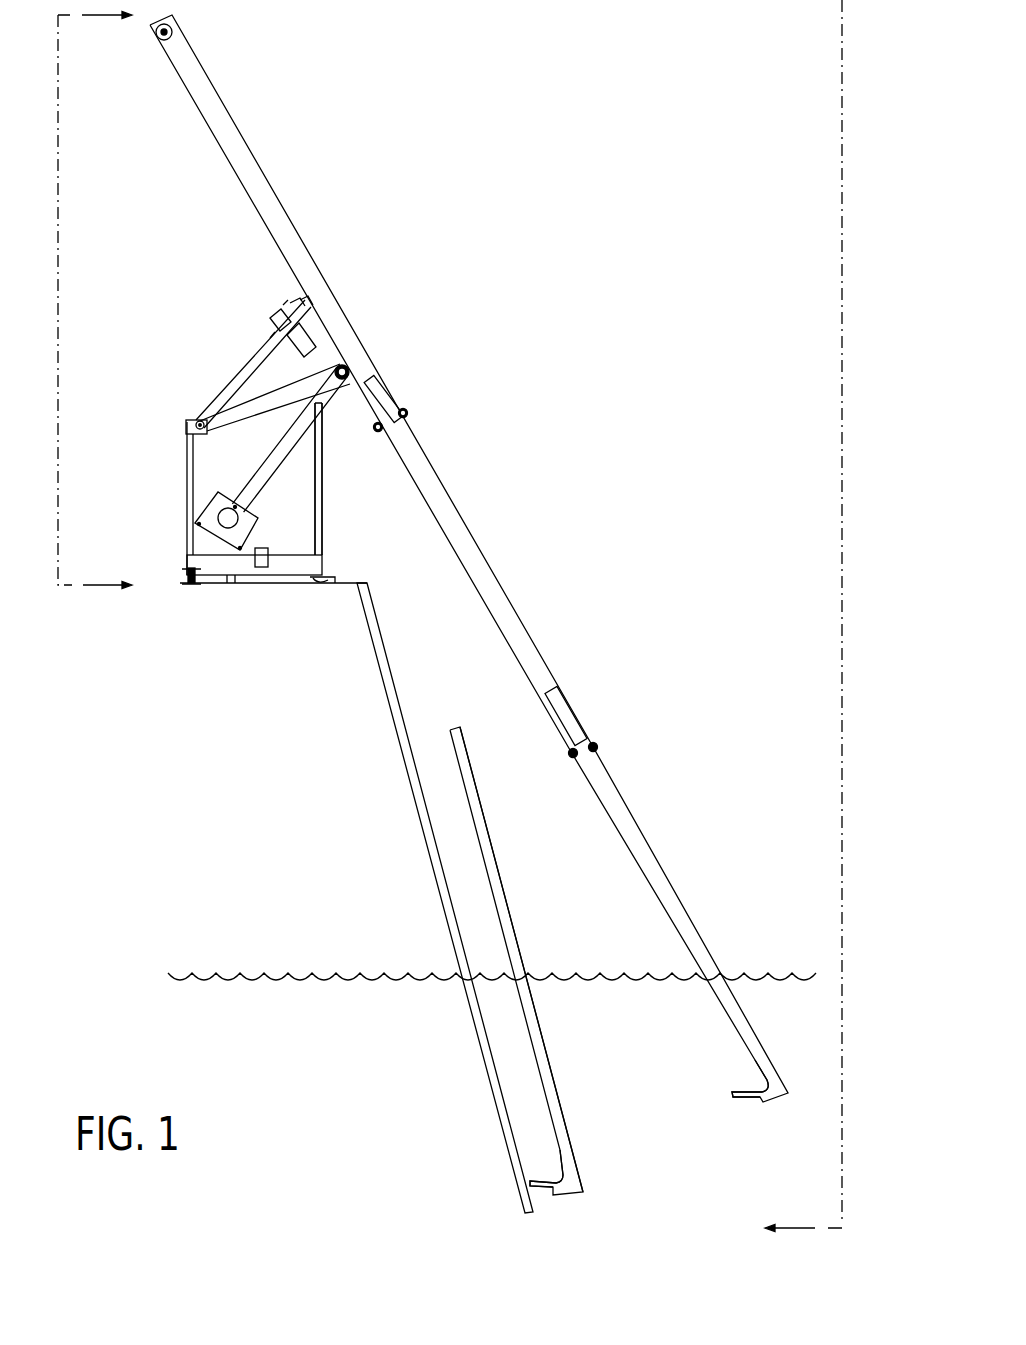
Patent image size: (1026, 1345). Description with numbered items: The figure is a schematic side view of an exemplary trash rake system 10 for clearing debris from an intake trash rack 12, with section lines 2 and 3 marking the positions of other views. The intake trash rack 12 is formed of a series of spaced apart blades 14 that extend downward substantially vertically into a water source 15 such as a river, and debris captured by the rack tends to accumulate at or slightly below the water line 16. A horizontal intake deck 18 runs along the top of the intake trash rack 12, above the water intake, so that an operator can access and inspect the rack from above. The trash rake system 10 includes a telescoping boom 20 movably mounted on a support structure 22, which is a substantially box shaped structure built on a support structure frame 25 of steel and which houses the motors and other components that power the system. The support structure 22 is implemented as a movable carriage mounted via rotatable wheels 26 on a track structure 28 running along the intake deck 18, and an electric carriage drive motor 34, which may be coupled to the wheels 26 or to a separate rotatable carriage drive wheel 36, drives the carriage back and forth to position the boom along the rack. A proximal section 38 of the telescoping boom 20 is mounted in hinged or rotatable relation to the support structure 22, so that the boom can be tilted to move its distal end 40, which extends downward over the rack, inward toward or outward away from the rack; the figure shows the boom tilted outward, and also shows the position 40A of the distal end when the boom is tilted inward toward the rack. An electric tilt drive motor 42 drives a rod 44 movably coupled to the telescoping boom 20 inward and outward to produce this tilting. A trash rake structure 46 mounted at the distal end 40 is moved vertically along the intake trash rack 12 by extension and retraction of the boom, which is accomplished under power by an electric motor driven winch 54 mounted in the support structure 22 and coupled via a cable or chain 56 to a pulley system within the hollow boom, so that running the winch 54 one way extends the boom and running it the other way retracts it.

The section line 2- 2 is at (799, 616).
The section line 3- 3 is at (99, 300).
The trash rake system 10 is at (582, 418).
The intake trash rack 12 is at (391, 752).
The blades 14 is at (445, 900).
The water source 15 is at (648, 1070).
The water line 16 is at (760, 972).
The intake deck 18 is at (286, 585).
The telescoping boom 20 is at (305, 215).
The support structure 22 is at (332, 495).
The support structure frame 25 is at (322, 447).
The wheels 26 is at (332, 579).
The track structure 28 is at (330, 581).
The carriage drive motor 34 is at (260, 570).
The carriage drive wheel 36 is at (185, 576).
The proximal section 38 is at (358, 340).
The distal end 40 is at (676, 890).
The inward tilted position of distal end 40A is at (512, 918).
The tilt drive motor 42 is at (270, 322).
The rod 44 is at (283, 304).
The trash rake structure 46 is at (744, 1103).
The winch 54 is at (207, 508).
The cable or chain 56 is at (242, 488).